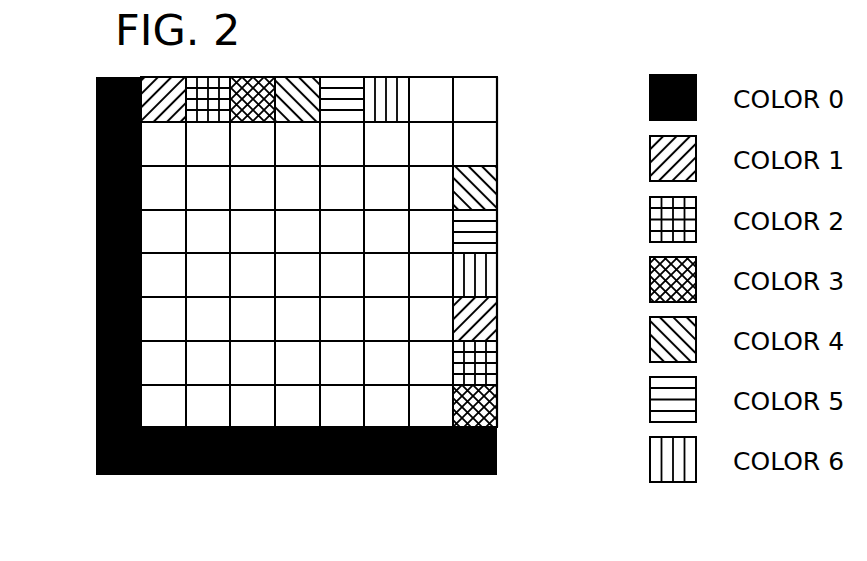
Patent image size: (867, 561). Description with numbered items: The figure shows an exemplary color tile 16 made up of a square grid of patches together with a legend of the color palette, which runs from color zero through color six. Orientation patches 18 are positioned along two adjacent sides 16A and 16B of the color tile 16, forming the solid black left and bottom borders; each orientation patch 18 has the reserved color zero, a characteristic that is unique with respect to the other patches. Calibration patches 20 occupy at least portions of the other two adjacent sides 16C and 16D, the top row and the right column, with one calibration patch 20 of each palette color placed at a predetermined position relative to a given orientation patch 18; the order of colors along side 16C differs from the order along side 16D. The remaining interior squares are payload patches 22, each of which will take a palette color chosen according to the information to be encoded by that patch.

The color tile 16 is at (60, 131).
The side 16A is at (96, 287).
The side 16B is at (327, 475).
The side 16C is at (415, 77).
The side 16D is at (497, 157).
The orientation patch 18 is at (96, 363).
The calibration patch 20 is at (388, 77).
The payload patch 22 is at (360, 291).